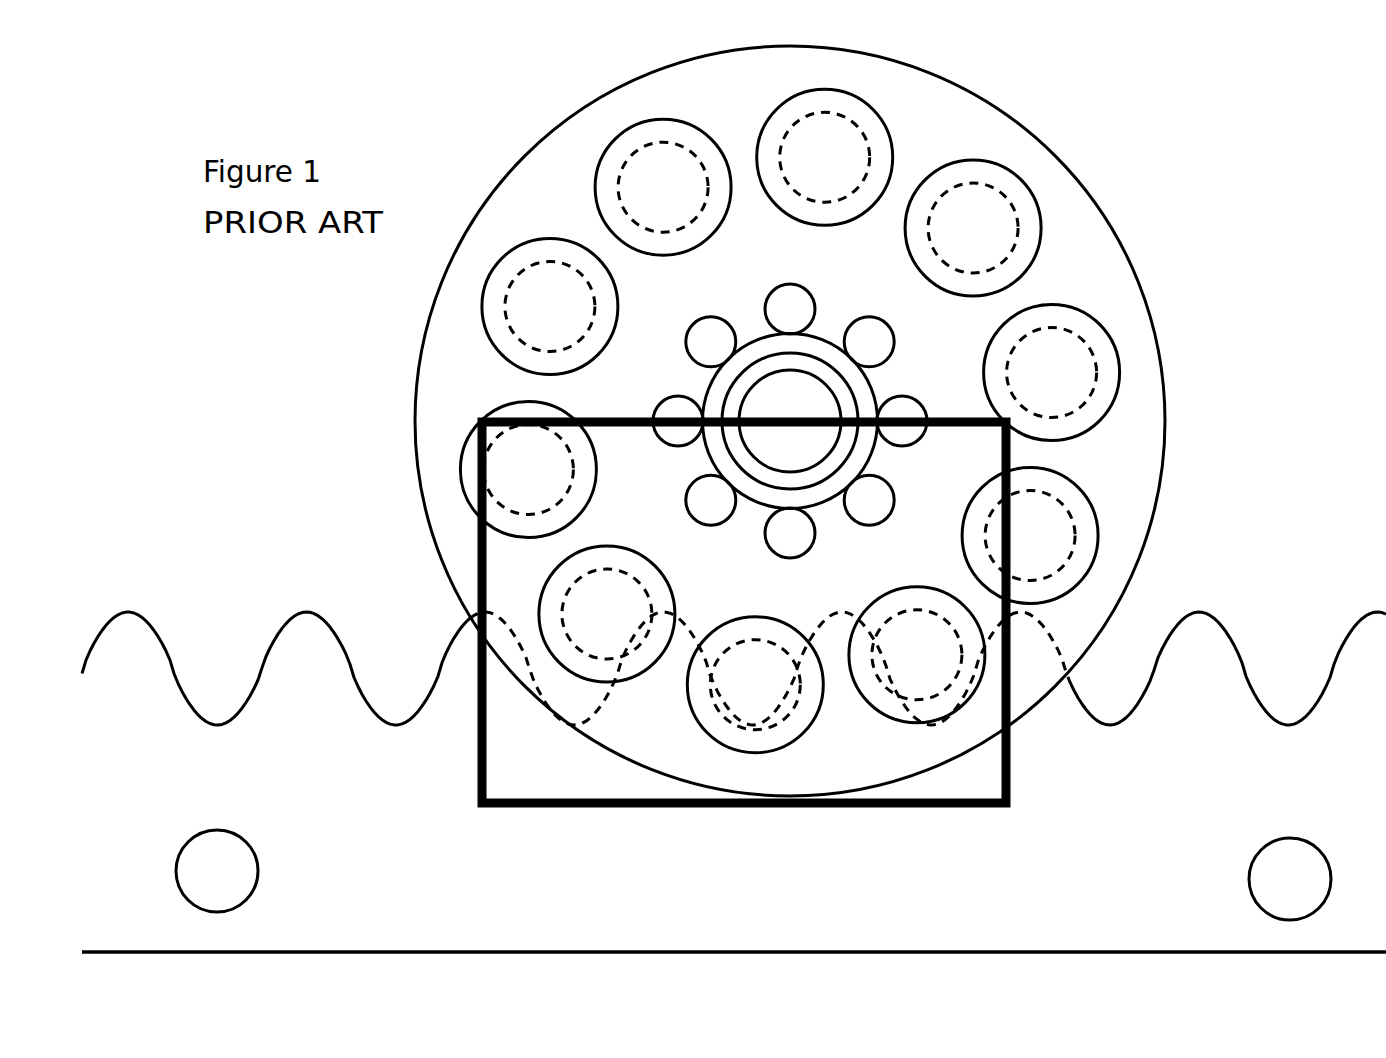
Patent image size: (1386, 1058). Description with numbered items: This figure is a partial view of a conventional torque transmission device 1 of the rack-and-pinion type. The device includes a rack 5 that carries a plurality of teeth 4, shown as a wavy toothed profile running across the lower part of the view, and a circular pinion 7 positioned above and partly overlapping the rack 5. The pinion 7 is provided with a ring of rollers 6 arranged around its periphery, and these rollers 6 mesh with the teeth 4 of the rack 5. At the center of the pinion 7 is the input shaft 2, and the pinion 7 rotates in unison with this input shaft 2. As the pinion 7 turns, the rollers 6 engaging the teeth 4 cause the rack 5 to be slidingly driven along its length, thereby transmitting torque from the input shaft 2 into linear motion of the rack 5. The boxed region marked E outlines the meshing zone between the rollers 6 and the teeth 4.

The torque transmission device 1 is at (1213, 198).
The input shaft 2 is at (852, 300).
The teeth 4 is at (1233, 660).
The rack 5 is at (1009, 908).
The rollers 6 is at (1007, 207).
The pinion 7 is at (1160, 333).
The detail region E is at (1008, 768).